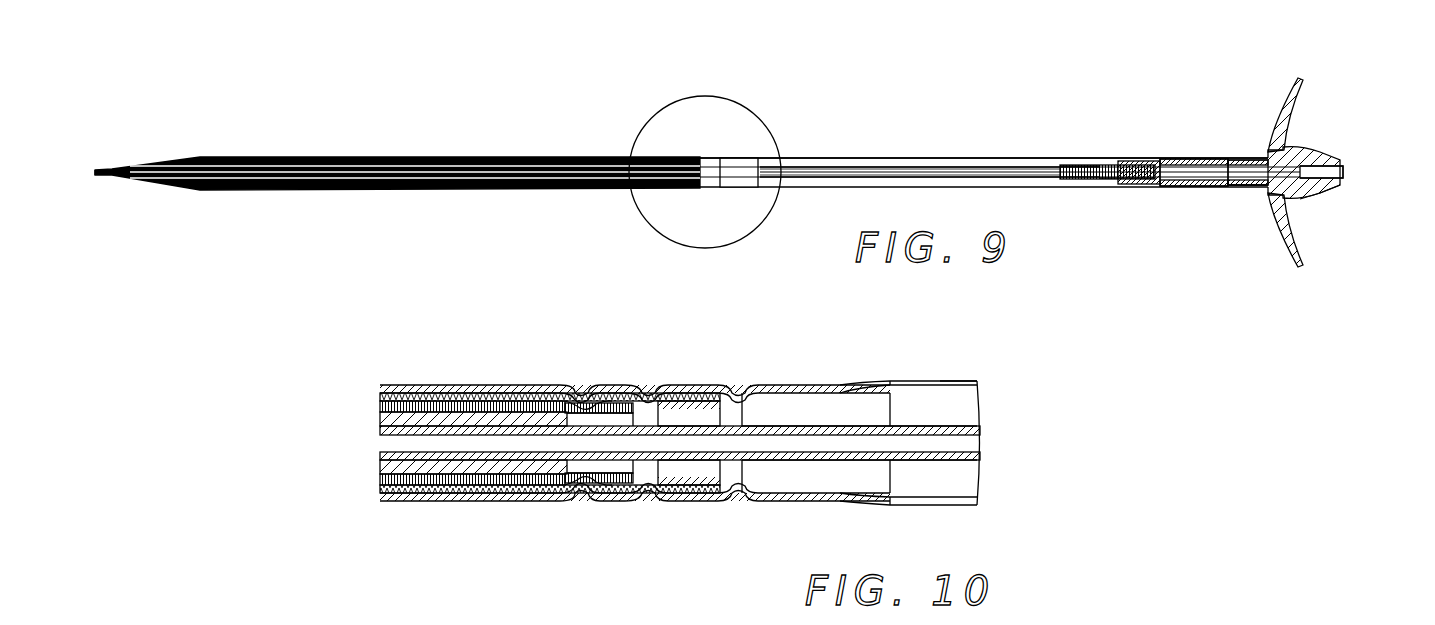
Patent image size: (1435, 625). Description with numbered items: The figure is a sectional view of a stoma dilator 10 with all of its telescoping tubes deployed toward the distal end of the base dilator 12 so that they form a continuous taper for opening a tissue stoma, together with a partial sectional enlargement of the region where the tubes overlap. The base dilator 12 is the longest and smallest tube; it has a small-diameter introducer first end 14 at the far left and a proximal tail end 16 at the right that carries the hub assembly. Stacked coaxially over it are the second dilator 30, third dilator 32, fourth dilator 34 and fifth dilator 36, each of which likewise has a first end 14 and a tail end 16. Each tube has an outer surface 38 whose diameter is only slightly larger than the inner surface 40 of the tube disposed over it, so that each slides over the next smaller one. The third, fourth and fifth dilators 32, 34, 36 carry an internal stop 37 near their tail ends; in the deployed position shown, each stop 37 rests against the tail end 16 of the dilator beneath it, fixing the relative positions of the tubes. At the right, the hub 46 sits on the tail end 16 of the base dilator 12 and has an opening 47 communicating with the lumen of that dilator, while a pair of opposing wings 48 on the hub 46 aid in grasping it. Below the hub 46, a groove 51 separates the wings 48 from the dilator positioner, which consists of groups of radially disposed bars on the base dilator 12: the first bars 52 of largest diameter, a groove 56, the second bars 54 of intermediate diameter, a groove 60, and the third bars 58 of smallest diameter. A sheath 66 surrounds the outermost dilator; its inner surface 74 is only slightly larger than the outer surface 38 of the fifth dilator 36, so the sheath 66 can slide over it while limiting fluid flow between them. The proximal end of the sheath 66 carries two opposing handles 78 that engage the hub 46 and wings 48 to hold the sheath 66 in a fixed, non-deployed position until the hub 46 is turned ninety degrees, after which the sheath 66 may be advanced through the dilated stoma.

In FIG. 9, the stoma dilator 10 is at (594, 58).
In FIG. 9, the base dilator 12 is at (988, 158).
In FIG. 10, the base dilator 12 is at (772, 425).
In FIG. 9, the first end 14 is at (93, 168).
In FIG. 10, the tail end 16 is at (566, 386).
In FIG. 10, the second dilator 30 is at (495, 404).
In FIG. 10, the third dilator 32 is at (592, 404).
In FIG. 10, the fourth dilator 34 is at (688, 384).
In FIG. 10, the fifth dilator 36 is at (805, 384).
In FIG. 10, the internal stop 37 is at (574, 396).
In FIG. 10, the outer surface 38 is at (840, 382).
In FIG. 10, the inner surface 40 is at (820, 486).
In FIG. 9, the hub 46 is at (1318, 193).
In FIG. 9, the opening 47 is at (1343, 172).
In FIG. 9, the wings 48 is at (1298, 148).
In FIG. 9, the groove 51 is at (1249, 187).
In FIG. 9, the first bars 52 is at (1203, 159).
In FIG. 9, the second bars 54 is at (1141, 160).
In FIG. 9, the groove 56 is at (1168, 187).
In FIG. 9, the third bars 58 is at (1090, 187).
In FIG. 9, the groove 60 is at (1110, 180).
In FIG. 9, the sheath 66 is at (1077, 154).
In FIG. 10, the sheath 66 is at (953, 378).
In FIG. 9, the inner surface 74 is at (906, 157).
In FIG. 10, the inner surface 74 is at (958, 483).
In FIG. 9, the handles 78 is at (1295, 104).